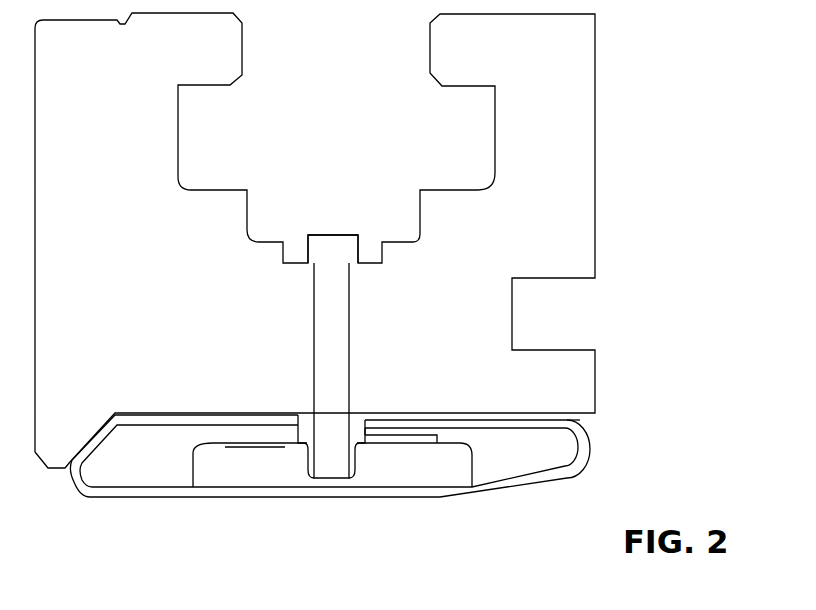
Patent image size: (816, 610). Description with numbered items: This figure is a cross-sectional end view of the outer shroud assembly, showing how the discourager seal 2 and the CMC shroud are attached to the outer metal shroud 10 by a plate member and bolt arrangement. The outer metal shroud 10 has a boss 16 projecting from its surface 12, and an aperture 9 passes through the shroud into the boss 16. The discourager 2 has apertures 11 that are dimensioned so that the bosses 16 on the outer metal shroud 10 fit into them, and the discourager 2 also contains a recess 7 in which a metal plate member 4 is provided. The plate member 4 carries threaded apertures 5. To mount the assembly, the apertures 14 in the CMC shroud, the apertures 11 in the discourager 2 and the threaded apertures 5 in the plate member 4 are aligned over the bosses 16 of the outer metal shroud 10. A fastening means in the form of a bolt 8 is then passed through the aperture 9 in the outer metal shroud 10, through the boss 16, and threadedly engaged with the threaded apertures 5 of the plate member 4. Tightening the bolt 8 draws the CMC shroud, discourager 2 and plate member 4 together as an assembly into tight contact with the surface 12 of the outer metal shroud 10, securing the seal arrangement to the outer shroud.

The discourager seal 2 is at (566, 438).
The plate member 4 is at (365, 462).
The threaded apertures 5 is at (304, 447).
The recess 7 is at (210, 443).
The bolt 8 is at (321, 322).
The aperture 9 is at (315, 277).
The outer metal shroud 10 is at (569, 136).
The apertures 11 is at (285, 430).
The surface 12 is at (588, 424).
The apertures 14 is at (366, 422).
The boss 16 is at (295, 430).